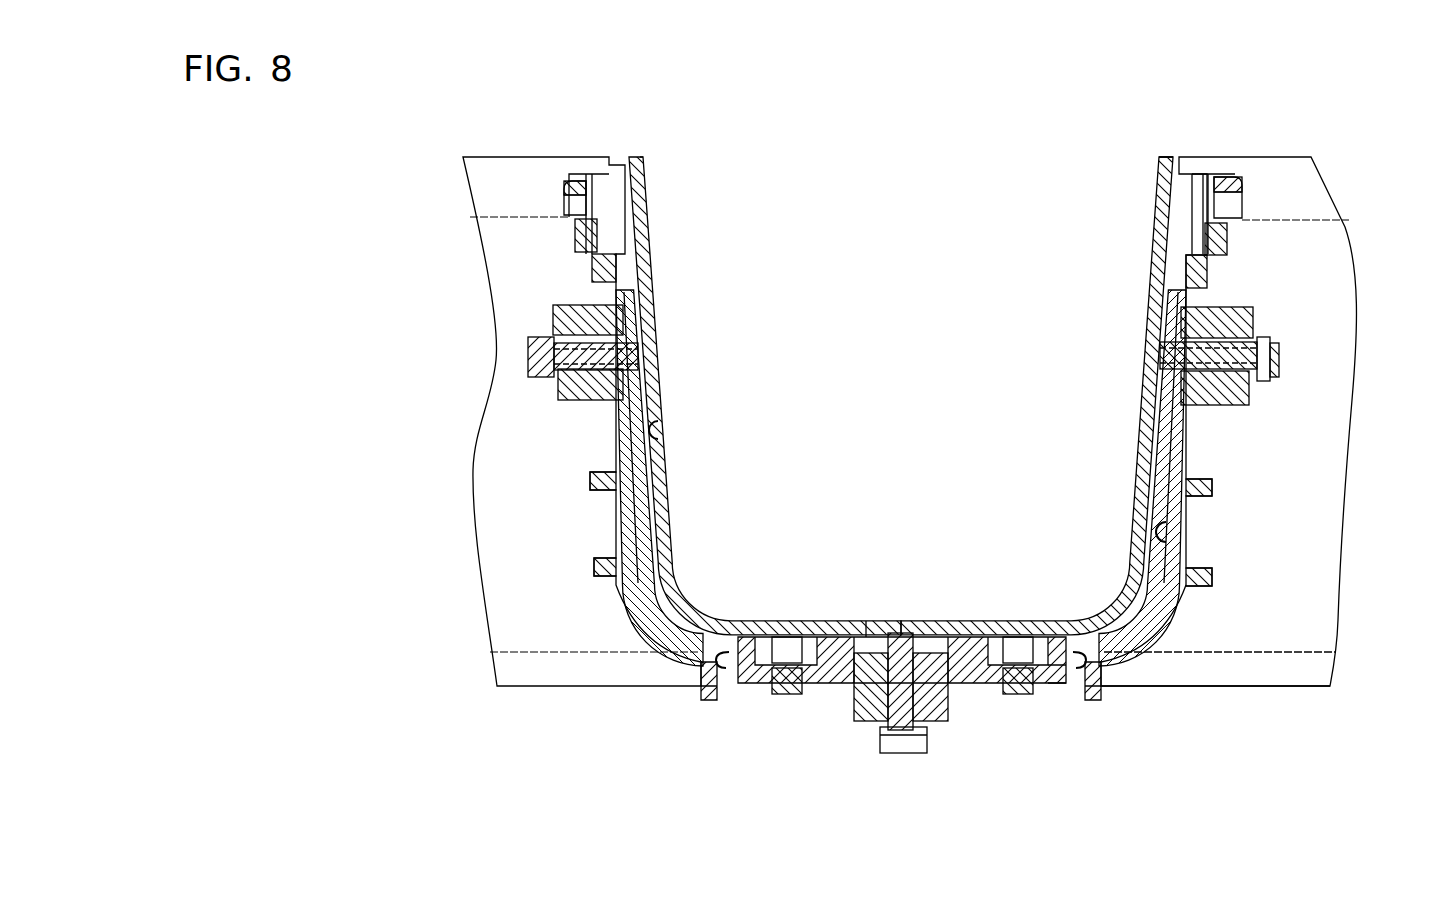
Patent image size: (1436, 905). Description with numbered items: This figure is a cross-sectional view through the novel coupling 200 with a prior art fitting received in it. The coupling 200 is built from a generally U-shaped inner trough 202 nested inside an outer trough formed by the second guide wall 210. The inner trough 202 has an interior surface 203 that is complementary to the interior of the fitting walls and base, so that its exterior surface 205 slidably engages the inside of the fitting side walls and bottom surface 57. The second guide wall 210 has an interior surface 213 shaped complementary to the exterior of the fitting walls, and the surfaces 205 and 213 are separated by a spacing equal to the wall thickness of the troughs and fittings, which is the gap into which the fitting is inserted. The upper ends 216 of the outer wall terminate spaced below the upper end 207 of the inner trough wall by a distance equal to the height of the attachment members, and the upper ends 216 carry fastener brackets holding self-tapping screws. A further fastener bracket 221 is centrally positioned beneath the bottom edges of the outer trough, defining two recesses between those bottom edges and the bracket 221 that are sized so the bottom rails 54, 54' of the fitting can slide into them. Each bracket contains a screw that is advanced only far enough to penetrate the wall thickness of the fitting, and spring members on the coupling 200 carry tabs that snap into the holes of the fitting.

The ribbed pathway 54 is at (902, 716).
The ribbed pathway 54' is at (1029, 751).
The bottom surface 57 is at (873, 636).
The coupling 200 is at (680, 198).
The inner trough 202 is at (1157, 211).
The interior surface 203 is at (658, 362).
The exterior surface 205 is at (660, 437).
The upper end 207 is at (1165, 154).
The second guide wall 210 is at (1195, 448).
The interior surface 213 is at (1168, 540).
The upper end 216 is at (1235, 312).
The fastener bracket 221 is at (940, 712).